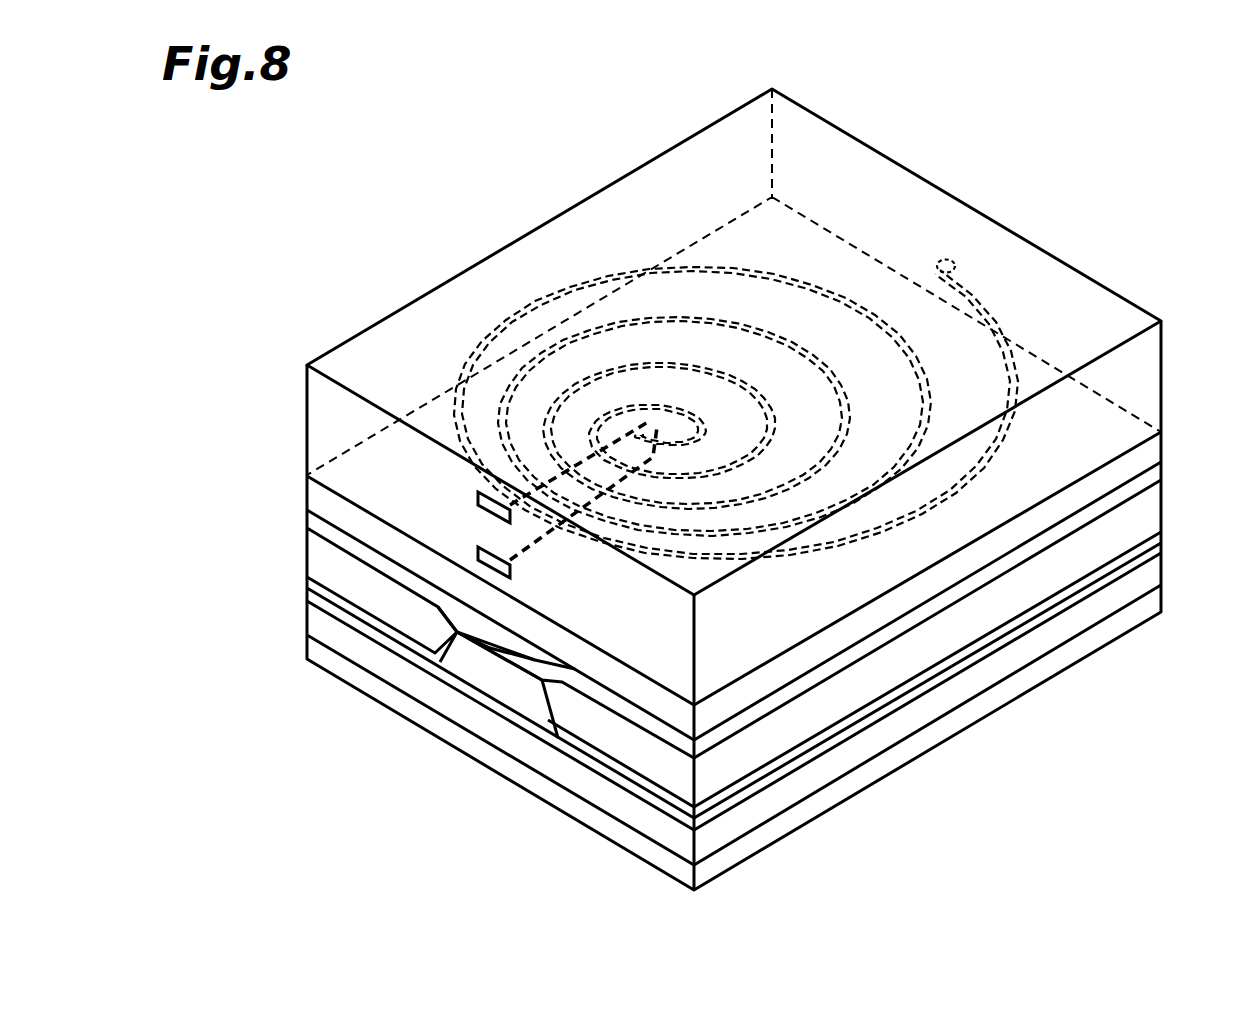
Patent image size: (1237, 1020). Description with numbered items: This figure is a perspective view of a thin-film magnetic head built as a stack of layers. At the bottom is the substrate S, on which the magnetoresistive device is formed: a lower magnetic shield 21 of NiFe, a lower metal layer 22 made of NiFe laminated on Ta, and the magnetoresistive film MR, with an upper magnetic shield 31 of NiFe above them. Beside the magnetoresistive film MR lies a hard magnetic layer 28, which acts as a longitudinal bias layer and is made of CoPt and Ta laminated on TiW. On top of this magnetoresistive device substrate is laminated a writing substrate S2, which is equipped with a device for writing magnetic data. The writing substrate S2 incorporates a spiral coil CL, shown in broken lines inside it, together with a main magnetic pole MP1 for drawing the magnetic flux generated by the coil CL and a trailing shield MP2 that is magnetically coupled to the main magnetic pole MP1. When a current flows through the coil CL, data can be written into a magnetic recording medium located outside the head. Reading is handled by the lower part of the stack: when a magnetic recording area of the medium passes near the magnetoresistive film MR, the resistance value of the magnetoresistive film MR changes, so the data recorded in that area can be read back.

The substrate S is at (1161, 600).
The writing substrate S2 is at (1153, 381).
The lower magnetic shield 21 is at (1161, 582).
The lower metal layer 22 is at (1161, 553).
The hard magnetic layer 28 is at (320, 557).
The upper magnetic shield 31 is at (320, 503).
The magnetoresistive film MR is at (490, 678).
The main magnetic pole MP1 is at (546, 535).
The trailing shield MP2 is at (477, 492).
The spiral coil CL is at (798, 274).